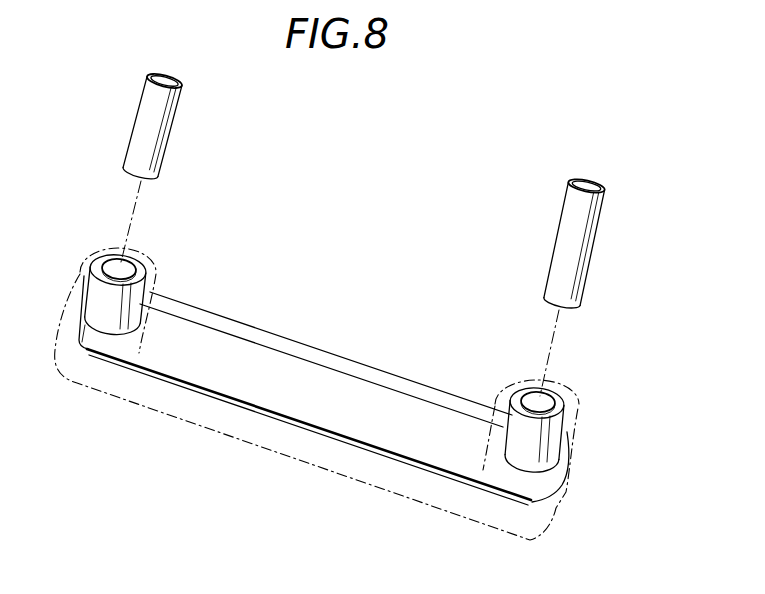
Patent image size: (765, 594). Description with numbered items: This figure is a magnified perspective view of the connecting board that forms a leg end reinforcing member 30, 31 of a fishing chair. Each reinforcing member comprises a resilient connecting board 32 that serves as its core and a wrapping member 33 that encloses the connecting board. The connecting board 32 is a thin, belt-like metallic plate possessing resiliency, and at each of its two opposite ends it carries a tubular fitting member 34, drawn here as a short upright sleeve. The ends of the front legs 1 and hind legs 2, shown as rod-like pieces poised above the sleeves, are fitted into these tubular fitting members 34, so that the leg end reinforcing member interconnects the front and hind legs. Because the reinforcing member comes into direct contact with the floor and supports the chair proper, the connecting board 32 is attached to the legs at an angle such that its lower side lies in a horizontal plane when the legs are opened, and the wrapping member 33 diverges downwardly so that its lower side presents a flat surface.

The front legs 1 is at (328, 233).
The hind legs 2 is at (568, 238).
The leg end reinforcing member 30 is at (324, 389).
The leg end reinforcing member 31 is at (336, 346).
The connecting board 32 is at (310, 400).
The wrapping member 33 is at (180, 403).
The tubular fitting member 34 is at (121, 264).